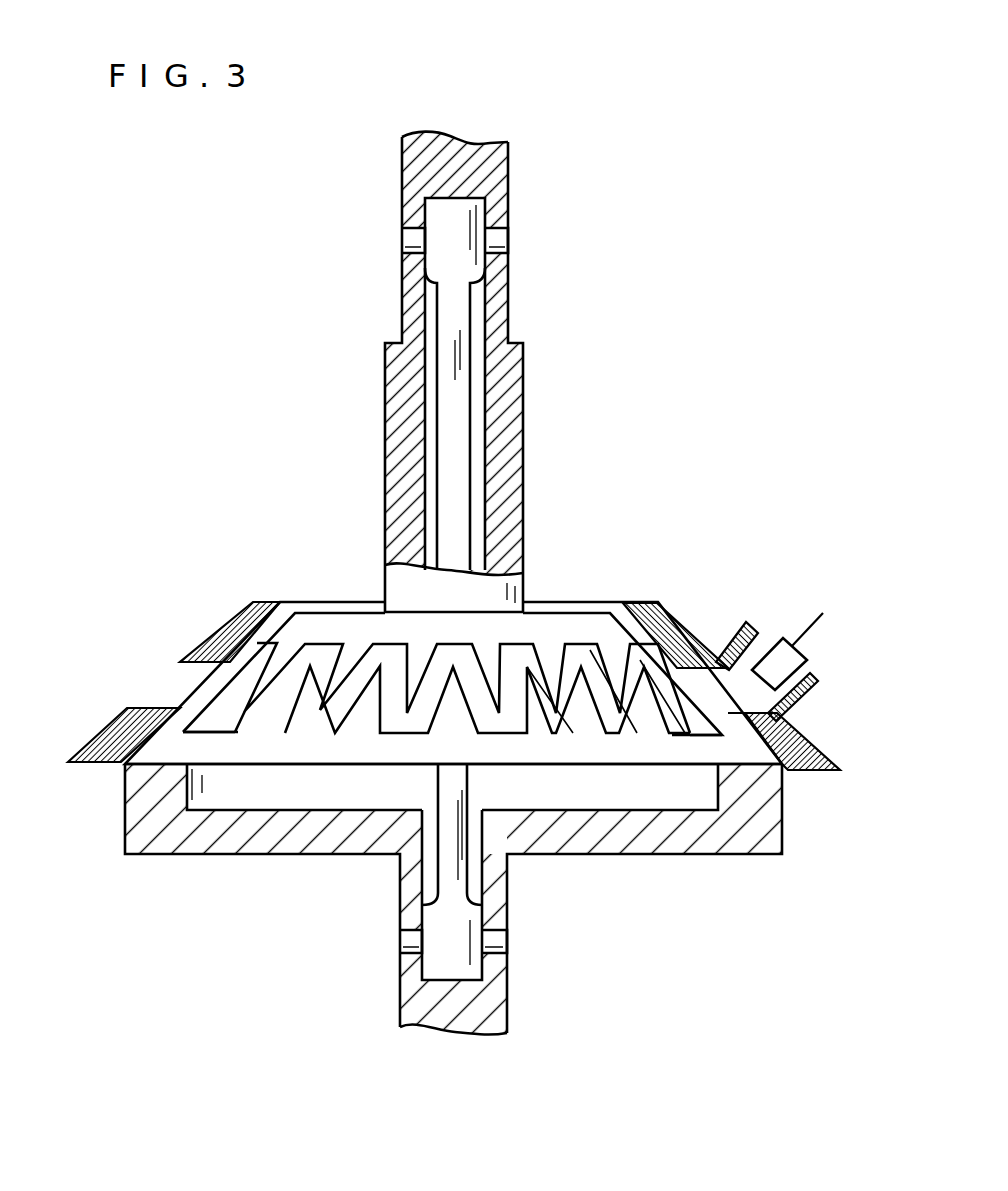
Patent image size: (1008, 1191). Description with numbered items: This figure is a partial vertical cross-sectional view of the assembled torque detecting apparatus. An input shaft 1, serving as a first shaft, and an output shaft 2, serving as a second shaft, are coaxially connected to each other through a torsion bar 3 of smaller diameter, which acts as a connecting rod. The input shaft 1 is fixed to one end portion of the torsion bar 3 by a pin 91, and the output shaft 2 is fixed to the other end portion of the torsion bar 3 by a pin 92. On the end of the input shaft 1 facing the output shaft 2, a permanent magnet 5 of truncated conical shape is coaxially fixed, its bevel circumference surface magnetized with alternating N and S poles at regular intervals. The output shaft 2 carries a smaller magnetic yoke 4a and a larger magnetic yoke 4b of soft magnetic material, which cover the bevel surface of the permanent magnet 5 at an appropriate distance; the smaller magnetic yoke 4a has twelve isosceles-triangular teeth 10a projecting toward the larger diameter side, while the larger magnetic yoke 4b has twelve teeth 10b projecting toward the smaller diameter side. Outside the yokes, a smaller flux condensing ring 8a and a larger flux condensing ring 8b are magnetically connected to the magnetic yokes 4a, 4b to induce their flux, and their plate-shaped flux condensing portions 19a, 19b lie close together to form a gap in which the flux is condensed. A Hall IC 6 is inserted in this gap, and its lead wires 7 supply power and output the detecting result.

The input shaft 1 is at (508, 166).
The pin 91 is at (498, 240).
The torsion bar 3 is at (463, 310).
The smaller magnetic yoke 4a is at (583, 622).
The larger magnetic yoke 4b is at (568, 760).
The teeth 10a is at (572, 683).
The teeth 10b is at (617, 692).
The permanent magnet 5 is at (303, 732).
The smaller flux condensing ring 8a is at (210, 637).
The larger flux condensing ring 8b is at (105, 730).
The flux condensing portion 19a is at (737, 622).
The flux condensing portion 19b is at (818, 690).
The Hall IC 6 is at (773, 640).
The lead wire 7 is at (820, 615).
The output shaft 2 is at (497, 1005).
The pin 92 is at (405, 942).